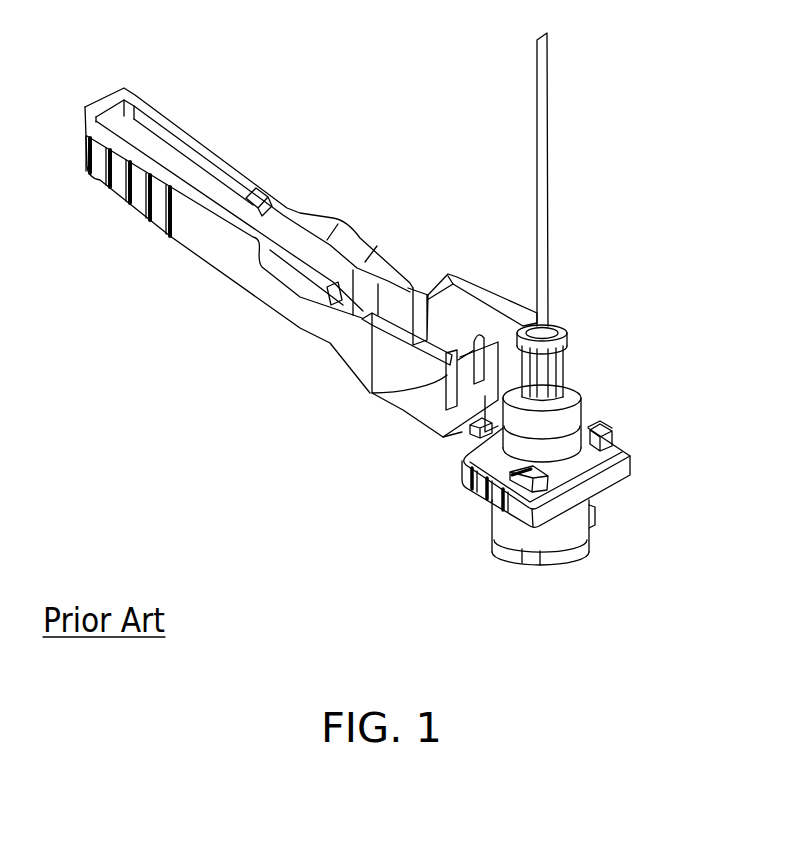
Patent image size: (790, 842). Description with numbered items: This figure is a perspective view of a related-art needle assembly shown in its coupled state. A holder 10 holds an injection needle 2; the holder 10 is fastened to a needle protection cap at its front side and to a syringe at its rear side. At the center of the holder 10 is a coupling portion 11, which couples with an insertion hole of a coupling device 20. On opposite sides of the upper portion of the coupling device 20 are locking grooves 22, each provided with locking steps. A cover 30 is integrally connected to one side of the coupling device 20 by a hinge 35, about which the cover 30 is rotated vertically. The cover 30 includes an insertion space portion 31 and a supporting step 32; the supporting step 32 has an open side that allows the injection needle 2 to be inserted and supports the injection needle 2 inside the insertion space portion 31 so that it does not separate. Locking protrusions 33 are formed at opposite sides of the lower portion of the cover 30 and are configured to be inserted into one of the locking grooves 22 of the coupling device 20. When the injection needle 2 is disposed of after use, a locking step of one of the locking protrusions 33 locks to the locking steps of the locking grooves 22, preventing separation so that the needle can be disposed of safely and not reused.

The injection needle 2 is at (548, 163).
The holder 10 is at (582, 586).
The coupling portion 11 is at (567, 337).
The coupling device 20 is at (544, 492).
The locking grooves 22 is at (614, 433).
The cover 30 is at (311, 270).
The insertion space portion 31 is at (171, 156).
The supporting step 32 is at (251, 197).
The locking protrusions 33 is at (376, 391).
The hinge 35 is at (468, 432).